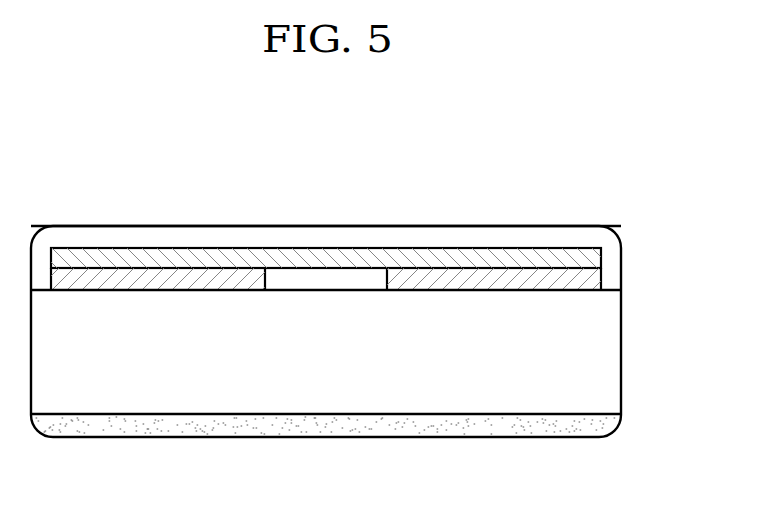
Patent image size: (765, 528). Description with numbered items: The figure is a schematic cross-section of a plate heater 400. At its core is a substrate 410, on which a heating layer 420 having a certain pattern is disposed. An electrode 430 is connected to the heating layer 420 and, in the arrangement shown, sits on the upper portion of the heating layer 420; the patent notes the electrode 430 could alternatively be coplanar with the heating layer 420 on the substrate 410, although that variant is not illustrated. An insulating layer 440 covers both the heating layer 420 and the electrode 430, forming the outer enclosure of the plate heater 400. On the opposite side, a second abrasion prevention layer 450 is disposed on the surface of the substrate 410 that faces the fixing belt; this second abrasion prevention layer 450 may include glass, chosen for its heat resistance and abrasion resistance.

The plate heater 400 is at (622, 217).
The substrate 410 is at (600, 349).
The heating layer 420 is at (593, 280).
The electrode 430 is at (593, 259).
The insulating layer 440 is at (597, 239).
The second abrasion prevention layer 450 is at (597, 426).